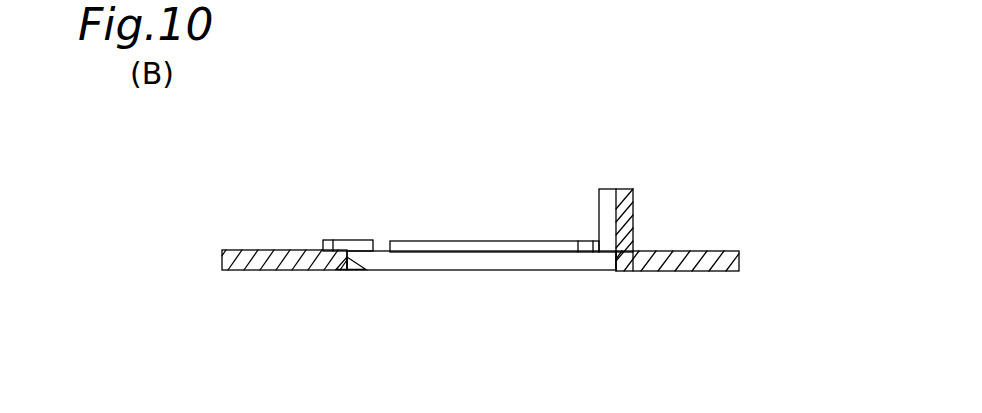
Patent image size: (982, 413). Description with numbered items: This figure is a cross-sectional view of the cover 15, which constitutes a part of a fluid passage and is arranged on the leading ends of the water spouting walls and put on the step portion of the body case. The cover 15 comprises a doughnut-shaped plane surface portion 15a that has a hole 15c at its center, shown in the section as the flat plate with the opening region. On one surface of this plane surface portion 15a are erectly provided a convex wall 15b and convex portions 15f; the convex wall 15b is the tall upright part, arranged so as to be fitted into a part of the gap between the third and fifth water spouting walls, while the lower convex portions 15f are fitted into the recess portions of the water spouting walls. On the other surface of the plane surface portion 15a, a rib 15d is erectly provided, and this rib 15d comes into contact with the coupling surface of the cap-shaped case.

The cover 15 is at (711, 210).
The plane surface portion 15a is at (287, 271).
The convex wall 15b is at (621, 189).
The hole 15c is at (367, 270).
The rib 15d is at (632, 272).
The convex portion 15f is at (332, 240).